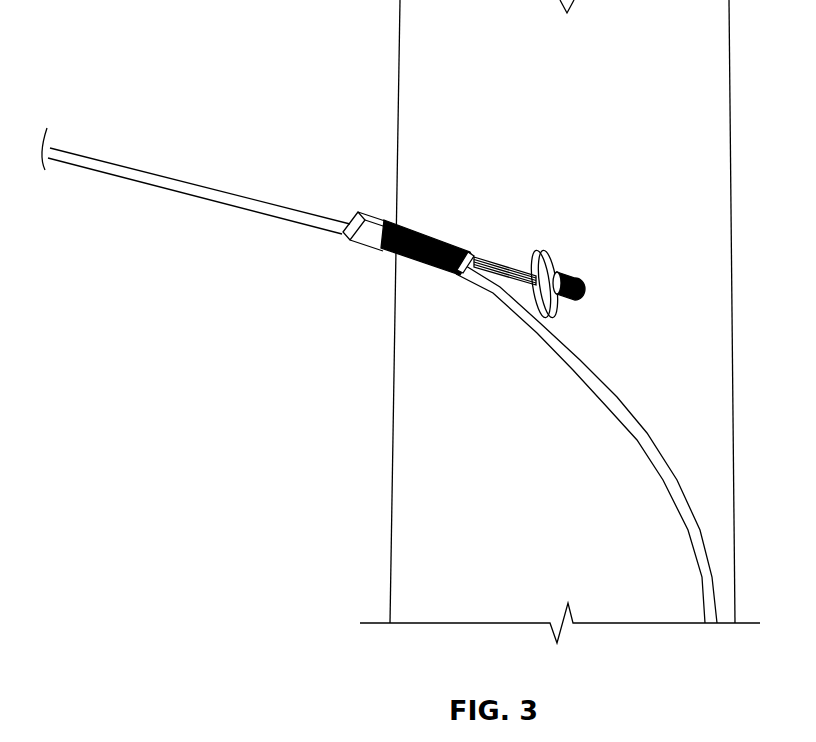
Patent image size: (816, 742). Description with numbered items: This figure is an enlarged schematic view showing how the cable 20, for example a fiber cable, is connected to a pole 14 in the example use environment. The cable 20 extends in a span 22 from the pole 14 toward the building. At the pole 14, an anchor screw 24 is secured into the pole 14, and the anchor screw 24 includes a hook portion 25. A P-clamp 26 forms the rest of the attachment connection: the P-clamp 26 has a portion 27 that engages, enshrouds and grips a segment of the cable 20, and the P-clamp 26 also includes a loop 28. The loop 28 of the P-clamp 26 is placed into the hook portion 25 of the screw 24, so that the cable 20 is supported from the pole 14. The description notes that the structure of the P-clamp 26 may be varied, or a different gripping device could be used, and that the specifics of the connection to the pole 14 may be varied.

The pole 14 is at (396, 560).
The cable 20 is at (76, 176).
The span 22 is at (66, 151).
The anchor screw 24 is at (563, 272).
The hook portion 25 is at (538, 251).
The P-clamp 26 is at (354, 253).
The portion 27 is at (417, 228).
The loop 28 is at (511, 269).